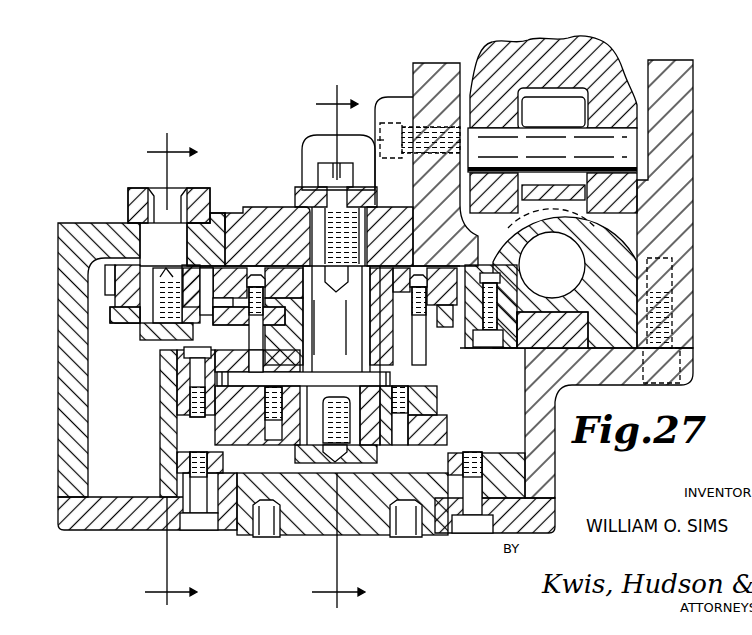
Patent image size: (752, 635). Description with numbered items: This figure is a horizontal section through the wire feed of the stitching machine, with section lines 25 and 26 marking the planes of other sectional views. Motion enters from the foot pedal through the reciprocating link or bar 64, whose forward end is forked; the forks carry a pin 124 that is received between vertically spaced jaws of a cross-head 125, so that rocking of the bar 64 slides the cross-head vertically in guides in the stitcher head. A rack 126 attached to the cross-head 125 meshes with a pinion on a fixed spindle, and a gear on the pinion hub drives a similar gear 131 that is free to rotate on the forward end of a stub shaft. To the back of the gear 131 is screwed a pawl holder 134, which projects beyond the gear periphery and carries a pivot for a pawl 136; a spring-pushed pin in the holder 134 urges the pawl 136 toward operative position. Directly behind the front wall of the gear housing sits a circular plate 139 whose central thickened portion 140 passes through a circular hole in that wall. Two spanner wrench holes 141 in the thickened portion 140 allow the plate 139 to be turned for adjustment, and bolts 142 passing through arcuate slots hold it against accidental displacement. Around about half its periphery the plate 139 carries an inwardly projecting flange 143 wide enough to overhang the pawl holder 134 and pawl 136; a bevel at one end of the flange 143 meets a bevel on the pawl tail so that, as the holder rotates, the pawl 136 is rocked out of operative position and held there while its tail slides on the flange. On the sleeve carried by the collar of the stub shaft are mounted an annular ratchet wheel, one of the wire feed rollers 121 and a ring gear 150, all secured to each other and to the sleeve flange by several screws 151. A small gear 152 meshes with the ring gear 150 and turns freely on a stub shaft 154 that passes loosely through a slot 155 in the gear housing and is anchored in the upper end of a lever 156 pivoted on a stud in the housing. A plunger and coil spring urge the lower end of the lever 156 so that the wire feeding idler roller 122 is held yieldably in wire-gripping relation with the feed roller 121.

The section line 25- 25 is at (327, 346).
The section line 26- 26 is at (158, 369).
The reciprocating link or bar 64 is at (602, 45).
The wire feed roller 121 is at (268, 316).
The wire feeding idler roller 122 is at (112, 318).
The pin 124 is at (630, 152).
The cross-head 125 is at (551, 106).
The rack 126 is at (470, 350).
The gear 131 is at (442, 430).
The pawl holder 134 is at (432, 402).
The pawl 136 is at (182, 377).
The circular plate 139 is at (233, 480).
The central thickened portion 140 is at (370, 535).
The spanner wrench holes 141 is at (268, 533).
The bolts 142 is at (205, 528).
The inwardly projecting flange 143 is at (163, 408).
The ring gear 150 is at (243, 238).
The screws 151 is at (272, 346).
The small gear 152 is at (100, 283).
The stub shaft 154 is at (143, 318).
The slot 155 is at (204, 240).
The lever 156 is at (195, 190).